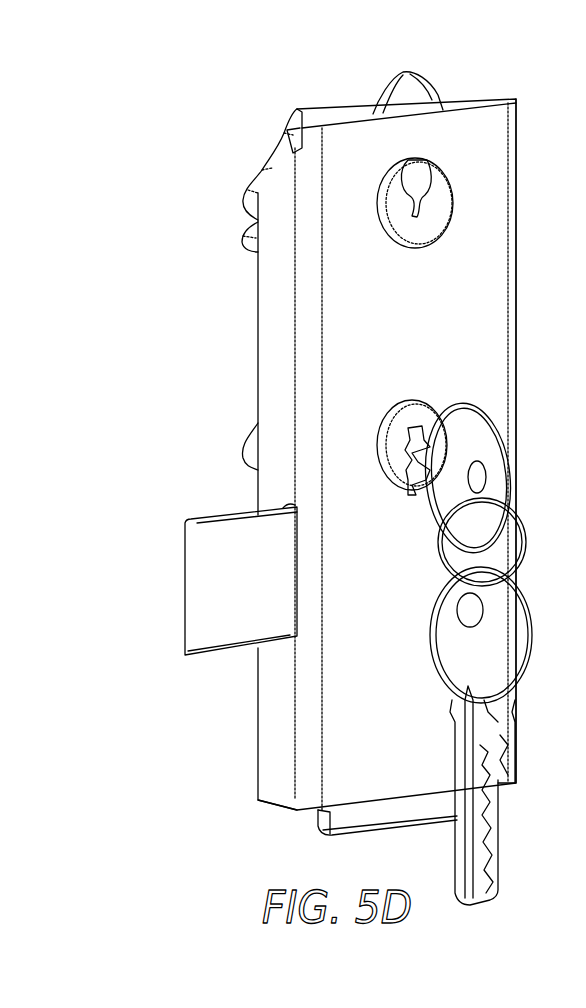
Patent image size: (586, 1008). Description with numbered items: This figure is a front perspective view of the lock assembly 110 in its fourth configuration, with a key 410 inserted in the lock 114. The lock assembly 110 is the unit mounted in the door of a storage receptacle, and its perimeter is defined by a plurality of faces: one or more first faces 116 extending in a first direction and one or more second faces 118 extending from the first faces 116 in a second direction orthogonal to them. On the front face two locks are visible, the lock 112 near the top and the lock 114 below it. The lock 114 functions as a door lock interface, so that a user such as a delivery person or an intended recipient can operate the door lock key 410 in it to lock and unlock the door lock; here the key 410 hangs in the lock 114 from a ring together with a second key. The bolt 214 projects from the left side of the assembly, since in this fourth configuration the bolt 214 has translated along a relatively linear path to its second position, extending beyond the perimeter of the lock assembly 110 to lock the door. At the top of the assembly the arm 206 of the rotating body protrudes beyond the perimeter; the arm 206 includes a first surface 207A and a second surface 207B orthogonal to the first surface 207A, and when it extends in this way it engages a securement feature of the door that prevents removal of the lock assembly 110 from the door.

The lock assembly 110 is at (186, 119).
The lock 112 is at (390, 197).
The lock 114 is at (392, 447).
The first face 116 is at (518, 292).
The second face 118 is at (283, 291).
The arm 206 is at (410, 90).
The first surface 207A is at (432, 86).
The second surface 207B is at (393, 90).
The bolt 214 is at (200, 518).
The key 410 is at (505, 474).